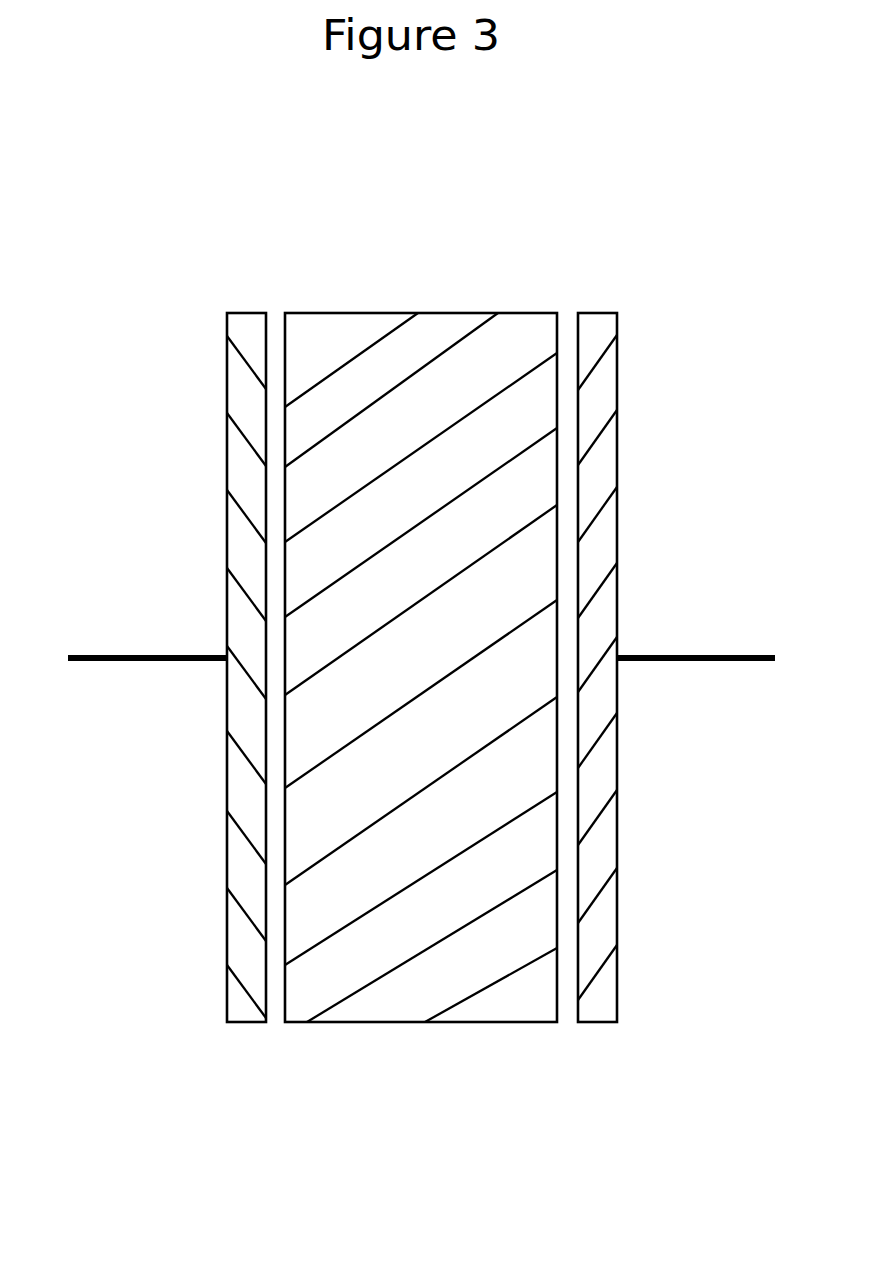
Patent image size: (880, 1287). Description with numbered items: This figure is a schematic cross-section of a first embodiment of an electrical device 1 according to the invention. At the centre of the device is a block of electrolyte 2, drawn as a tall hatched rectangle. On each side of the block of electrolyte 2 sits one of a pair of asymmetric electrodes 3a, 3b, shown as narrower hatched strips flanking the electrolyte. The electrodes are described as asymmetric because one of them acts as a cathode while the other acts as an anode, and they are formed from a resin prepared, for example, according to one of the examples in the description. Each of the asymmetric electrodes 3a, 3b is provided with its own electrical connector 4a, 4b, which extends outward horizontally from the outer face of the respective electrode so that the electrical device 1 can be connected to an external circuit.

The electrical device 1 is at (416, 717).
The block of electrolyte 2 is at (443, 310).
The asymmetric electrode 3a is at (227, 505).
The asymmetric electrode 3b is at (618, 523).
The electrical connector 4a is at (145, 655).
The electrical connector 4b is at (678, 663).